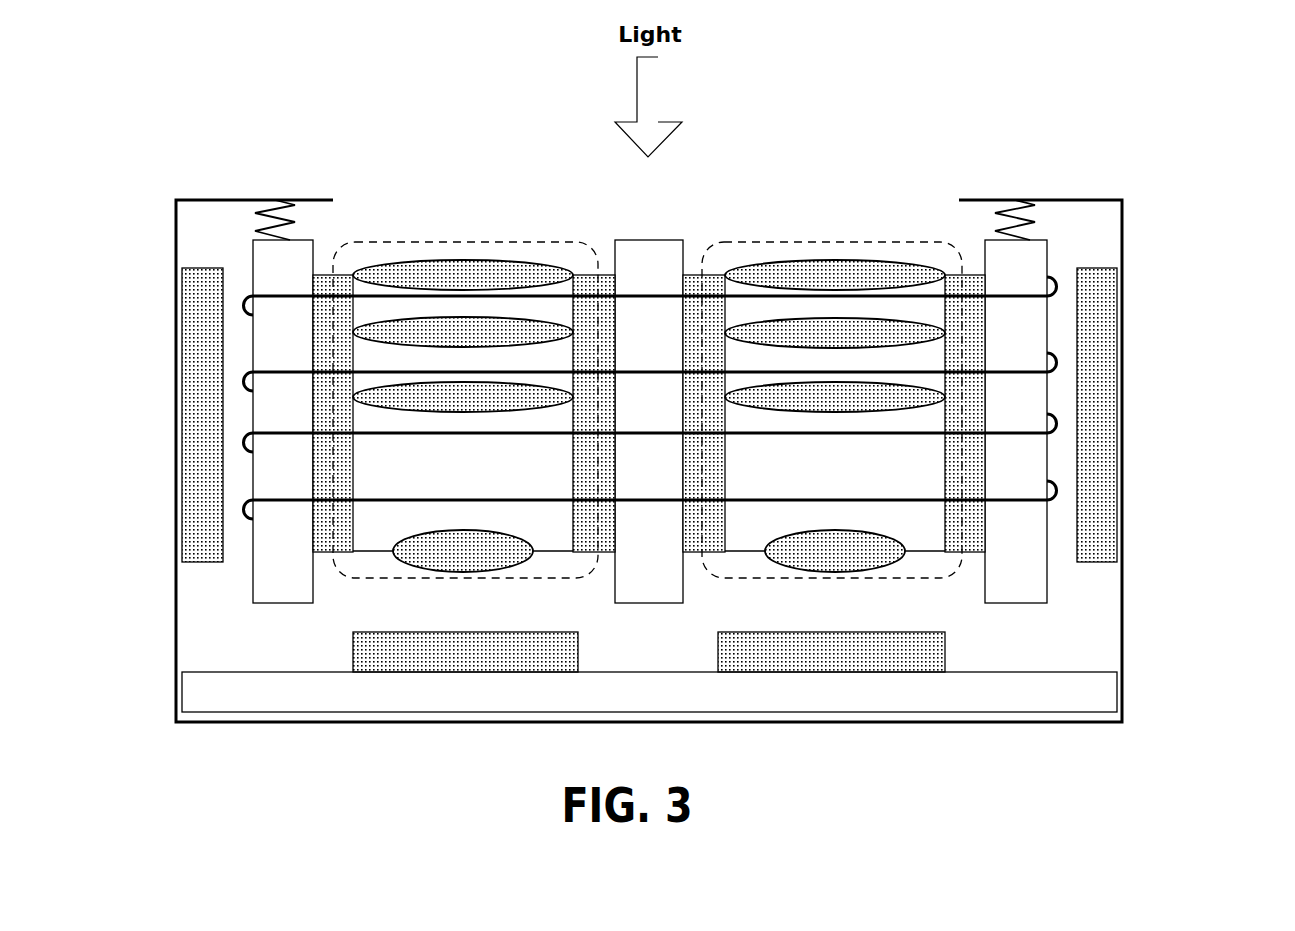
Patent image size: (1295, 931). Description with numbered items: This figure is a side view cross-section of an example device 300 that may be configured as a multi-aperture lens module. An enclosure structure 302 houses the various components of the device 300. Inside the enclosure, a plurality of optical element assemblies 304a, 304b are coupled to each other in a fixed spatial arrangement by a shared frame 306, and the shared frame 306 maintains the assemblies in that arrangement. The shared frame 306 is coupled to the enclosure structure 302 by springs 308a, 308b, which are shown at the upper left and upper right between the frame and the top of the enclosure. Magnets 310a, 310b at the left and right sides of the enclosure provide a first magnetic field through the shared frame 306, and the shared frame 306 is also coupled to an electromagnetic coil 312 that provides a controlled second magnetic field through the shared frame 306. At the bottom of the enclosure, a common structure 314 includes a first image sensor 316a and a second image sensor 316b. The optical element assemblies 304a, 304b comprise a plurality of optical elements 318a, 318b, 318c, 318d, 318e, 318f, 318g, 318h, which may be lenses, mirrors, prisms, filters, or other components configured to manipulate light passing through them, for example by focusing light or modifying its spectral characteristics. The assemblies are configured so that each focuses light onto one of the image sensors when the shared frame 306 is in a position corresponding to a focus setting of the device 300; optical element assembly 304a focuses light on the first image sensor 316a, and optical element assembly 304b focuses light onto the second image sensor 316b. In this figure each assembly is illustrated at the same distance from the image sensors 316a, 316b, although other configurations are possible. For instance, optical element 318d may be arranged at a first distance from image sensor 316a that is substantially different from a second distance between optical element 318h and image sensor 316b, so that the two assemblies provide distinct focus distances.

The device 300 is at (1188, 113).
The enclosure structure 302 is at (176, 220).
The optical element assembly 304a is at (495, 240).
The optical element assembly 304b is at (865, 240).
The shared frame 306 is at (650, 421).
The spring 308a is at (265, 217).
The spring 308b is at (1000, 217).
The magnet 310a is at (207, 418).
The magnet 310b is at (1102, 418).
The electromagnetic coil 312 is at (247, 522).
The common structure 314 is at (649, 692).
The first image sensor 316a is at (465, 652).
The second image sensor 316b is at (831, 652).
The optical element 318a is at (463, 275).
The optical element 318b is at (463, 332).
The optical element 318c is at (463, 397).
The optical element 318d is at (463, 551).
The optical element 318e is at (835, 275).
The optical element 318f is at (835, 333).
The optical element 318g is at (835, 397).
The optical element 318h is at (835, 551).